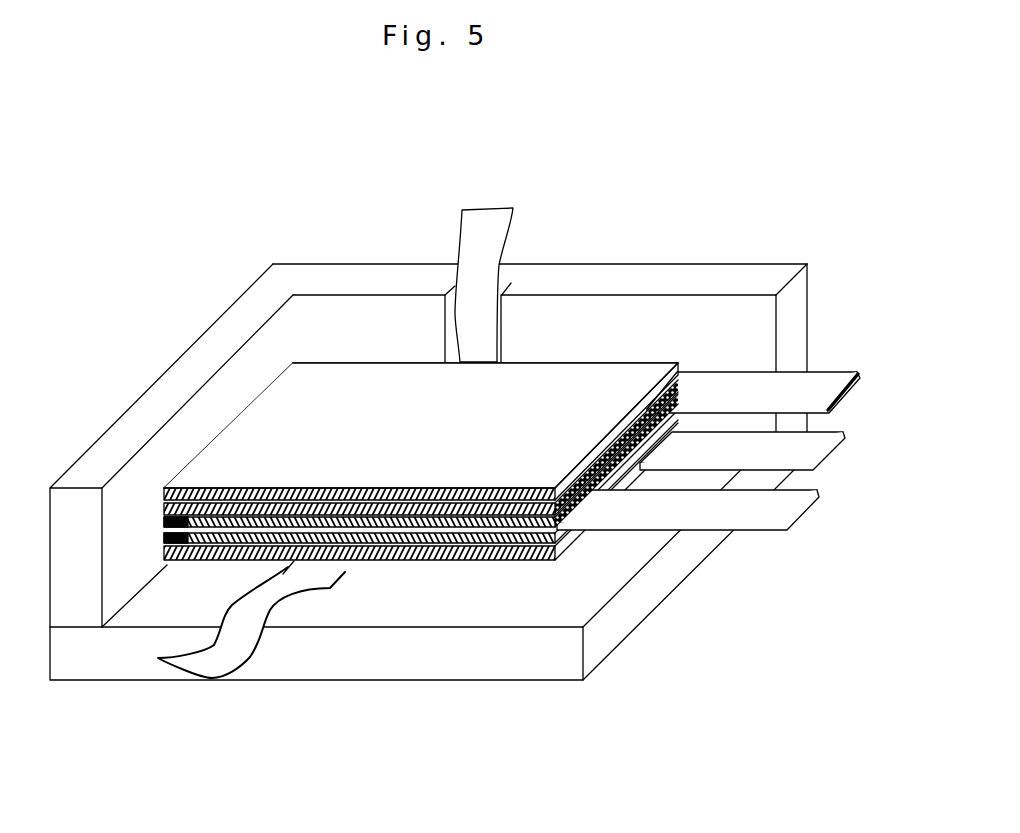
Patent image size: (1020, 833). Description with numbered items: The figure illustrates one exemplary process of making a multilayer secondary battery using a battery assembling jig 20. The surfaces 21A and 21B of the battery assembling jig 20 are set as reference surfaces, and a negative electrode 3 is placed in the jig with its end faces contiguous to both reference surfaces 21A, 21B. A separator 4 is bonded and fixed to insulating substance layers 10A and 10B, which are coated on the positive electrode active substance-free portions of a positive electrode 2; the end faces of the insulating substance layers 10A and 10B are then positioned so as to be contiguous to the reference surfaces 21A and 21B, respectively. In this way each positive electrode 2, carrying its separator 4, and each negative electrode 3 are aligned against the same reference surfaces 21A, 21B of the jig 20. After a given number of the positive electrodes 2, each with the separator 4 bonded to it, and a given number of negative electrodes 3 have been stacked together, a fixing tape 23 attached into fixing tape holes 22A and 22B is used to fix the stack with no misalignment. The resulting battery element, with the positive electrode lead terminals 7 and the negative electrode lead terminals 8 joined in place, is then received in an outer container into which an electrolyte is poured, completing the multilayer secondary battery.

The battery assembling jig 20 is at (210, 147).
The reference surface 21A is at (203, 385).
The reference surface 21B is at (586, 295).
The fixing tape hole 22A is at (330, 588).
The fixing tape hole 22B is at (453, 305).
The fixing tape 23 is at (233, 647).
The negative electrode 3 is at (618, 360).
The separator 4 is at (337, 503).
The positive electrode 2 is at (443, 545).
The insulating substance layer 10A is at (165, 518).
The insulating substance layer 10B is at (676, 412).
The positive electrode lead terminal 7 is at (738, 523).
The negative electrode lead terminal 8 is at (818, 387).